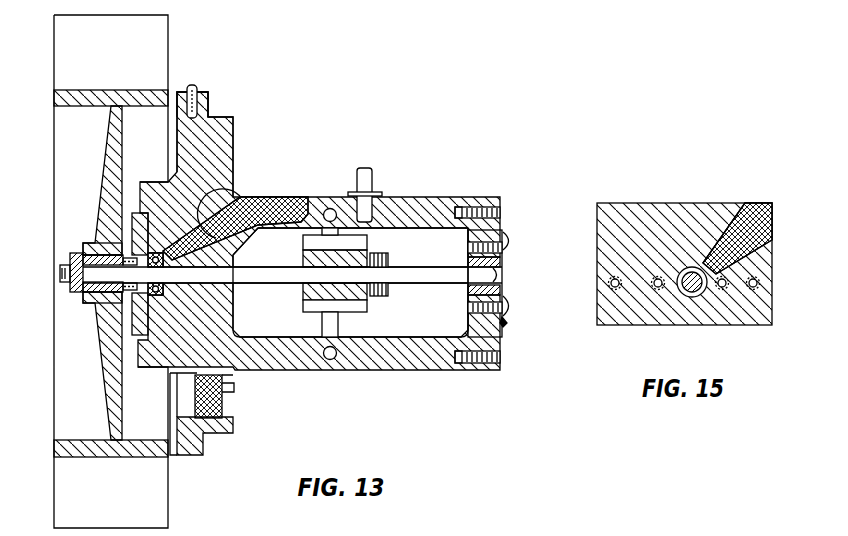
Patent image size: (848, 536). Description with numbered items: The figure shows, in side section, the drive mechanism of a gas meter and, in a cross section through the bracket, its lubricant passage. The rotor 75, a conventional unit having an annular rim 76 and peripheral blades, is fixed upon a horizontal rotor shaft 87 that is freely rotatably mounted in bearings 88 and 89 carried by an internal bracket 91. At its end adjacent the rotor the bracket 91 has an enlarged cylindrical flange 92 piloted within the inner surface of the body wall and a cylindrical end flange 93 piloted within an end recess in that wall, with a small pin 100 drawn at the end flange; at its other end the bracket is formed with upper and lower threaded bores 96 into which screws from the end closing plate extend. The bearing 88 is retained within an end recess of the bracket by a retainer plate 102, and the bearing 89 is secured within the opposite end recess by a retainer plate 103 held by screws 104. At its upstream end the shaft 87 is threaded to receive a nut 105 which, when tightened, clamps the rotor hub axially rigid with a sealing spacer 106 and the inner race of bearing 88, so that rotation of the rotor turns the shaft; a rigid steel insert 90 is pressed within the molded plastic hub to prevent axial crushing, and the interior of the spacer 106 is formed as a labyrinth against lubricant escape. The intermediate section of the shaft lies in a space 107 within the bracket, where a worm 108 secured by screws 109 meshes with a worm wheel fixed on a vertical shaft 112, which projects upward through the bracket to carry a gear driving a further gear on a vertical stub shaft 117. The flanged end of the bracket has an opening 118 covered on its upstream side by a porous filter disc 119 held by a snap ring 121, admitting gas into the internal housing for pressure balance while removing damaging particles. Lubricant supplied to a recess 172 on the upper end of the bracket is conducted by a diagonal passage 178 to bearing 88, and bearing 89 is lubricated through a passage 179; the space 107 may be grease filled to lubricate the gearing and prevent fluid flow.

In FIG. 13, the rotor 75 is at (72, 147).
In FIG. 13, the annular rim 76 is at (127, 453).
In FIG. 13, the rotor shaft 87 is at (270, 284).
In FIG. 15, the rotor shaft 87 is at (692, 297).
In FIG. 13, the bearing 88 is at (170, 274).
In FIG. 13, the bearing 89 is at (508, 268).
In FIG. 13, the rigid steel insert 90 is at (95, 301).
In FIG. 13, the internal bracket 91 is at (410, 207).
In FIG. 15, the internal bracket 91 is at (656, 207).
In FIG. 13, the enlarged cylindrical flange 92 is at (233, 123).
In FIG. 13, the cylindrical end flange 93 is at (205, 98).
In FIG. 13, the threaded bores 96 is at (486, 207).
In FIG. 15, the threaded bores 96 is at (759, 282).
In FIG. 13, the pin 100 is at (194, 84).
In FIG. 13, the retainer plate 102 is at (140, 212).
In FIG. 13, the retainer plate 103 is at (505, 327).
In FIG. 13, the screws 104 is at (512, 311).
In FIG. 13, the nut 105 is at (76, 254).
In FIG. 13, the sealing spacer 106 is at (156, 252).
In FIG. 13, the space 107 is at (420, 315).
In FIG. 13, the worm 108 is at (318, 241).
In FIG. 13, the screws 109 is at (386, 256).
In FIG. 13, the vertical shaft 112 is at (315, 335).
In FIG. 13, the vertical stub shaft 117 is at (368, 180).
In FIG. 13, the opening 118 is at (233, 388).
In FIG. 13, the filter disc 119 is at (222, 406).
In FIG. 13, the snap ring 121 is at (196, 381).
In FIG. 13, the recess 172 is at (276, 200).
In FIG. 15, the recess 172 is at (772, 228).
In FIG. 13, the diagonal passage 178 is at (238, 196).
In FIG. 15, the passage 179 is at (730, 240).